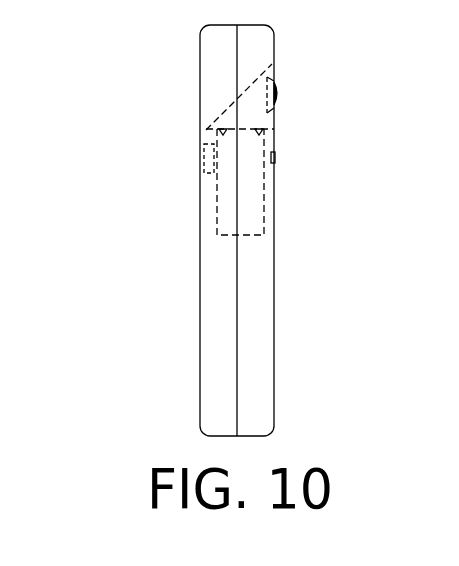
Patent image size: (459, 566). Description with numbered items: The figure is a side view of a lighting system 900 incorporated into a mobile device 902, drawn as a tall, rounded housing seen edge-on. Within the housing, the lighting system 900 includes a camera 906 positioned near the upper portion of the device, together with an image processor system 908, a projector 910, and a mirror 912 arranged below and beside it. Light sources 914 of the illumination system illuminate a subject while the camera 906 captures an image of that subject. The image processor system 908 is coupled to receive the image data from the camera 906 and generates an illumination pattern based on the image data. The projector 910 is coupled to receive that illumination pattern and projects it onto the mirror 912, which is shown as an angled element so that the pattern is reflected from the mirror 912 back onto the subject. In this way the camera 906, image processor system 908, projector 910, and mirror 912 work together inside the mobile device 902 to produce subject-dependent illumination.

The lighting system 900 is at (298, 232).
The mobile device 902 is at (90, 93).
The camera 906 is at (278, 90).
The image processor system 908 is at (203, 157).
The projector 910 is at (230, 213).
The mirror 912 is at (237, 100).
The light sources 914 is at (277, 158).